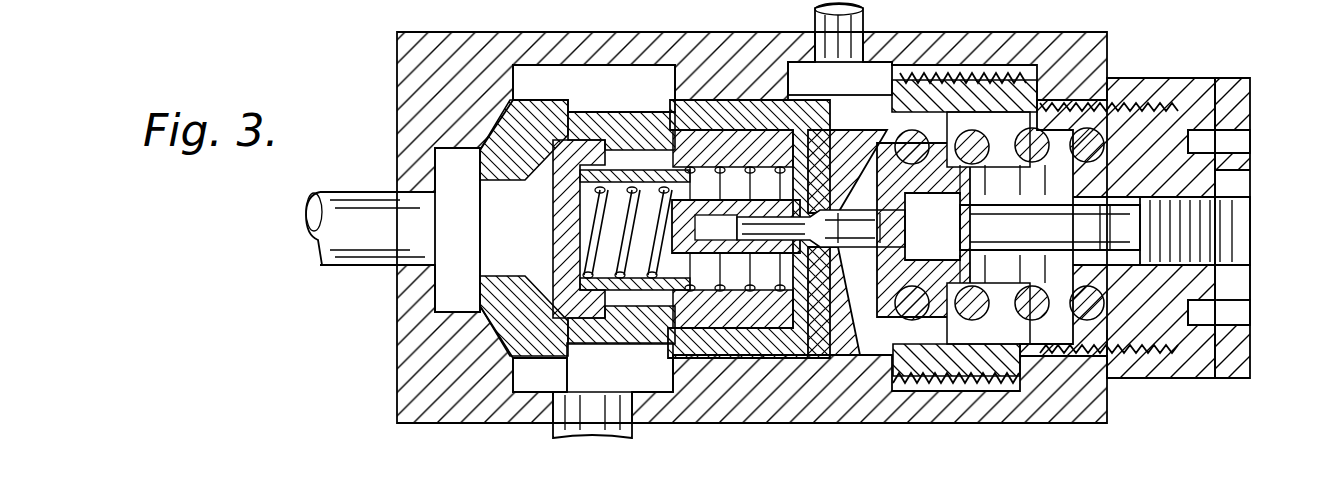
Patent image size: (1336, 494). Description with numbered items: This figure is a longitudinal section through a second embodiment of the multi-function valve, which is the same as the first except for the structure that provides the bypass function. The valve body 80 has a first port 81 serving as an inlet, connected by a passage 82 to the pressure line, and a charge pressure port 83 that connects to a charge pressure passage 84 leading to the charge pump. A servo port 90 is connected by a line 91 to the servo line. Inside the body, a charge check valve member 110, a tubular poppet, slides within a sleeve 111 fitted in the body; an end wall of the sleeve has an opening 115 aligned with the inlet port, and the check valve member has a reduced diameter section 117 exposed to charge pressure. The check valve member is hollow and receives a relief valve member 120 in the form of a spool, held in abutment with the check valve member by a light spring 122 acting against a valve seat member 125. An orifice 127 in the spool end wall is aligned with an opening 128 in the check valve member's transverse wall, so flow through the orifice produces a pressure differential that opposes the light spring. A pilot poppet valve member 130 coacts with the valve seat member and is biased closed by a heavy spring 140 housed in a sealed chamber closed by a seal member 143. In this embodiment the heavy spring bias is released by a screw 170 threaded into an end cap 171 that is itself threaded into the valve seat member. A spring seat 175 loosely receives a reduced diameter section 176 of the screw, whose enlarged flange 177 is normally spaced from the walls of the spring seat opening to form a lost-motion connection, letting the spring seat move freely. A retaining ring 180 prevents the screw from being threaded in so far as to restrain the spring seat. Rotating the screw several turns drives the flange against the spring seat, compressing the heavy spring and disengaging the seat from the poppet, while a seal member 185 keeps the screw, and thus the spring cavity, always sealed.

The valve body 80 is at (408, 106).
The first port 81 is at (420, 293).
The passage 82 is at (342, 262).
The charge pressure port 83 is at (672, 398).
The charge pressure passage 84 is at (632, 433).
The servo port 90 is at (868, 68).
The line 91 is at (825, 22).
The charge check valve member 110 is at (772, 145).
The sleeve 111 is at (525, 335).
The opening 115 is at (485, 193).
The reduced diameter section 117 is at (583, 138).
The relief valve member 120 is at (632, 160).
The light spring 122 is at (650, 290).
The valve seat member 125 is at (1110, 80).
The orifice 127 is at (560, 236).
The opening 128 is at (510, 250).
The poppet valve member 130 is at (830, 205).
The heavy spring 140 is at (1140, 320).
The seal member 143 is at (1210, 326).
The screw 170 is at (1238, 205).
The end cap 171 is at (1205, 276).
The spring seat 175 is at (935, 330).
The reduced diameter section 176 is at (1090, 215).
The enlarged flange 177 is at (935, 222).
The retaining ring 180 is at (1238, 265).
The seal member 185 is at (1105, 225).